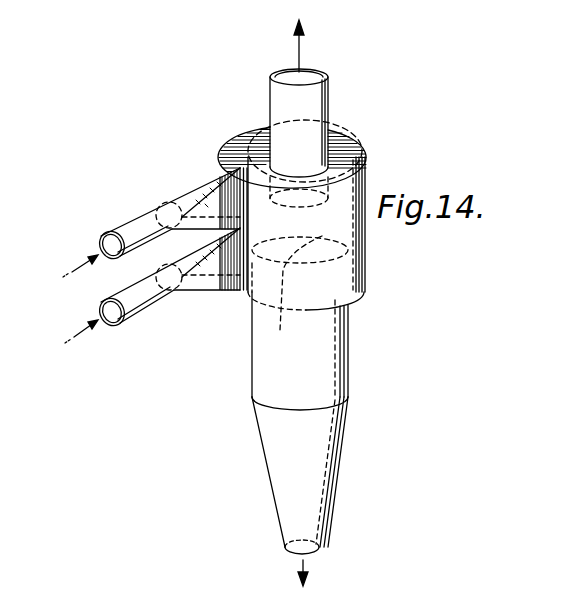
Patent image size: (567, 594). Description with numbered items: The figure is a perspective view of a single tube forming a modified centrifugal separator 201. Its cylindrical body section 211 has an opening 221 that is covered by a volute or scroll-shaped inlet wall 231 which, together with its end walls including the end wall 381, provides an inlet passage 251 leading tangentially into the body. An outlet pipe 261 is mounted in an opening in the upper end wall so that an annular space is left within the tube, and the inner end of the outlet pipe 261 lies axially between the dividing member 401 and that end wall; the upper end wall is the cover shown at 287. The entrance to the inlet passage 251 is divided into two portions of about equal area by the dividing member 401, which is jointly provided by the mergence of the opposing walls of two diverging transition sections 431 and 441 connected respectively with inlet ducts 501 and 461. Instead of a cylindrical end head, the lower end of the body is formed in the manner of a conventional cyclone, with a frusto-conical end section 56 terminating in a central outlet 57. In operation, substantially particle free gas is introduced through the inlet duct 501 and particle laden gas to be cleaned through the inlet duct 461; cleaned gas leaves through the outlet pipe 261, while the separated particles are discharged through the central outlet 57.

The outlet pipe 261 is at (278, 99).
The top cover plate 287 is at (336, 140).
The volute or scroll-shaped inlet wall 231 is at (346, 181).
The dividing member 401 is at (248, 208).
The inlet passage 251 is at (217, 170).
The diverging transition section 431 is at (190, 192).
The inlet duct 501 is at (138, 228).
The end wall 381 is at (245, 292).
The diverging transition section 441 is at (187, 289).
The inlet duct 461 is at (143, 318).
The opening 221 is at (293, 294).
The cylindrical body section 211 is at (257, 355).
The separator 201 is at (352, 350).
The frusto-conical end section 56 is at (330, 447).
The central outlet 57 is at (315, 552).